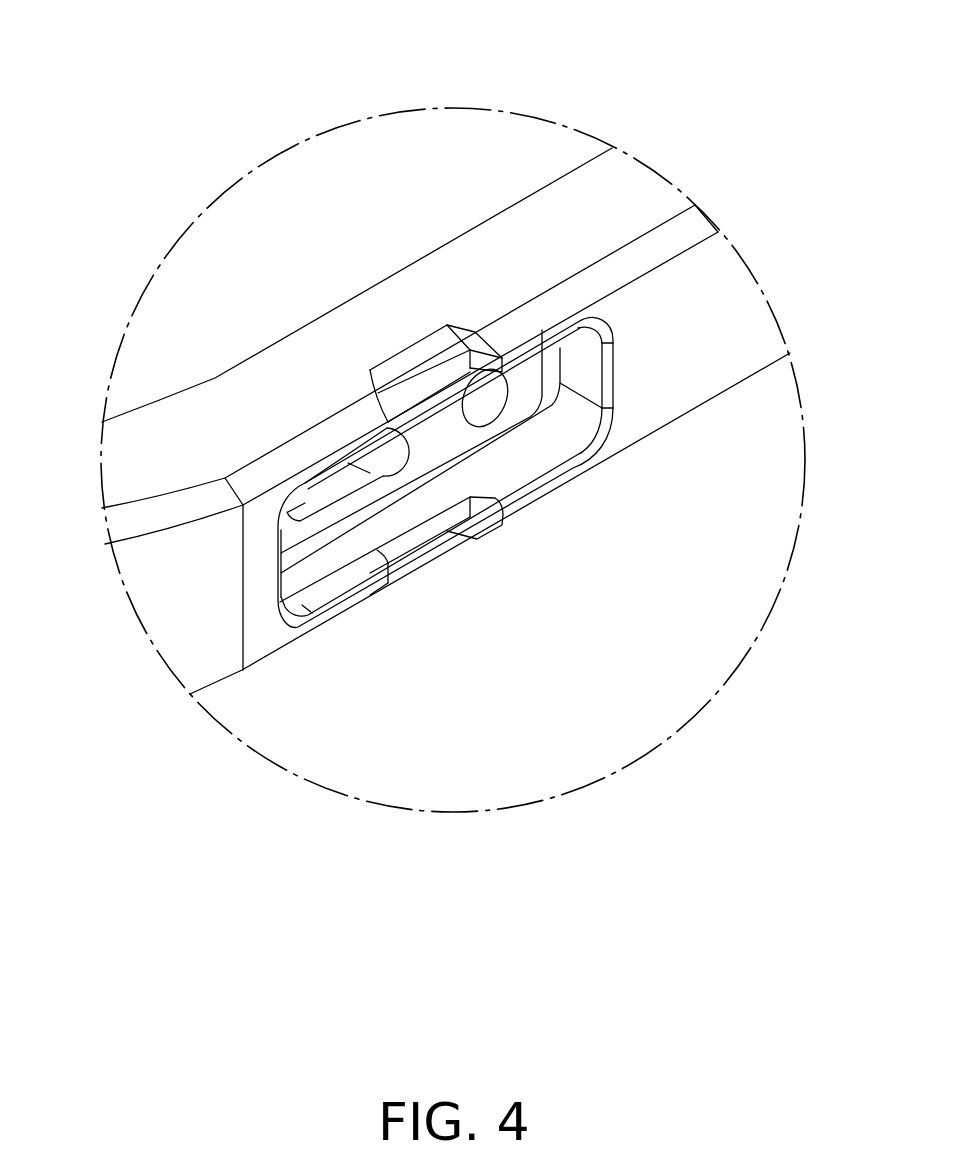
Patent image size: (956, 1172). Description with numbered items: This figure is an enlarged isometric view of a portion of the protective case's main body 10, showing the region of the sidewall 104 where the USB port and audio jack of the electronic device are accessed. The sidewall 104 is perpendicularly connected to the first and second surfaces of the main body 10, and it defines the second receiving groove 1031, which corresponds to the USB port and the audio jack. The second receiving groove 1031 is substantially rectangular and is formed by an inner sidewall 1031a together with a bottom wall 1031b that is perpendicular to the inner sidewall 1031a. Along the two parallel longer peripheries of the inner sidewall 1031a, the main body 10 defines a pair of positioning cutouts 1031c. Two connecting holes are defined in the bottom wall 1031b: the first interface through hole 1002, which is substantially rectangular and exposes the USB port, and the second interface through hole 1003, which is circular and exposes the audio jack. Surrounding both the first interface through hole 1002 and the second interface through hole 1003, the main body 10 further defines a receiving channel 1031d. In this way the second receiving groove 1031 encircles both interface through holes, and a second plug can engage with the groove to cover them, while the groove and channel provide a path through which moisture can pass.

The main body 10 is at (565, 230).
The sidewall 104 is at (703, 277).
The first interface through hole 1002 is at (302, 505).
The second interface through hole 1003 is at (483, 407).
The second receiving groove 1031 is at (452, 550).
The inner sidewall 1031a is at (345, 565).
The bottom wall 1031b is at (437, 418).
The positioning cutouts 1031c is at (420, 560).
The receiving channel 1031d is at (308, 553).